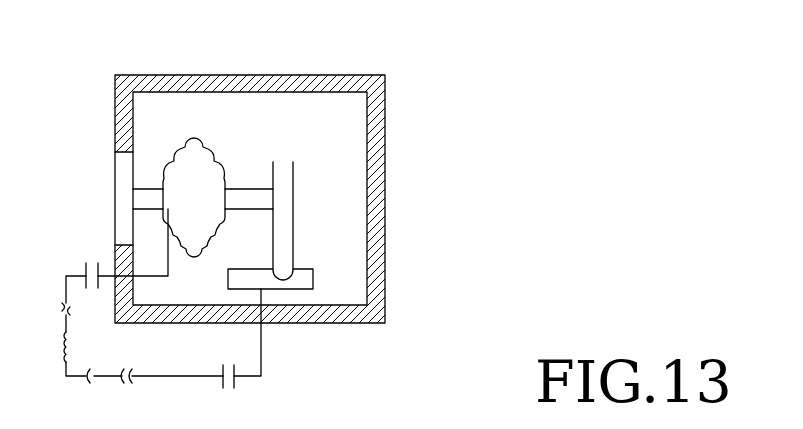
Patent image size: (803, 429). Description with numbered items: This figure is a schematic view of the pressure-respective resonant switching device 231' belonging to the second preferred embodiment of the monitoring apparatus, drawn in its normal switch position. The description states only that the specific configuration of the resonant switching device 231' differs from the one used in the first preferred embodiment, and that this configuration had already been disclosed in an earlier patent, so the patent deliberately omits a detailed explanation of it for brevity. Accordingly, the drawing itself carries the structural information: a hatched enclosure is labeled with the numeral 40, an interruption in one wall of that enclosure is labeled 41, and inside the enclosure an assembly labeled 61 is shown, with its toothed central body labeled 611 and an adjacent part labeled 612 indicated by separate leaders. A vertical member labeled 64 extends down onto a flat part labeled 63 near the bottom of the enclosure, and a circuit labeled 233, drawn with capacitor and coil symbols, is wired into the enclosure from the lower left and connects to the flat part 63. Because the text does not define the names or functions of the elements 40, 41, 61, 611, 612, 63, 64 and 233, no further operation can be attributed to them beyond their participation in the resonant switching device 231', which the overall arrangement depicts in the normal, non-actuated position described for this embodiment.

The resonant switching device 231' is at (437, 36).
The housing wall 40 is at (385, 117).
The window 41 is at (115, 160).
The rotor assembly 61 is at (238, 160).
The gear rotor 611 is at (187, 170).
The rotor shaft 612 is at (205, 150).
The base plate 63 is at (313, 276).
The support rod 64 is at (293, 217).
The resonant circuit 233 is at (161, 316).